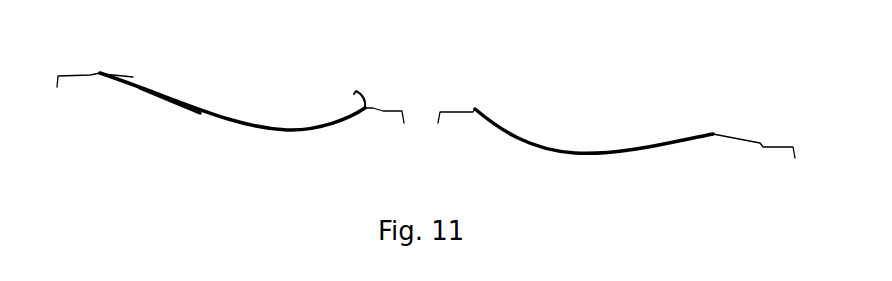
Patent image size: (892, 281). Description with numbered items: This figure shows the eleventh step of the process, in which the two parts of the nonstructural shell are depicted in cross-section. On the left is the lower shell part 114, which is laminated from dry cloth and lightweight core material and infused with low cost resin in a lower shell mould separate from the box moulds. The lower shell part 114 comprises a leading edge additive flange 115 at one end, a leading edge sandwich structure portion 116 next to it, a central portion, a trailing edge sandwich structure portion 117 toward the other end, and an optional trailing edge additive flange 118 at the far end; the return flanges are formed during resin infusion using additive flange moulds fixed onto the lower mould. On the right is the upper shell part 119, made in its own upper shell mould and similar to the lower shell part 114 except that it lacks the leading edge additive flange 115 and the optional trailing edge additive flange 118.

The lower shell part 114 is at (211, 101).
The leading edge additive flange 115 is at (358, 93).
The leading edge sandwich structure portion 116 is at (342, 127).
The trailing edge sandwich structure portion 117 is at (165, 100).
The trailing edge additive flange 118 is at (120, 77).
The upper shell part 119 is at (616, 131).